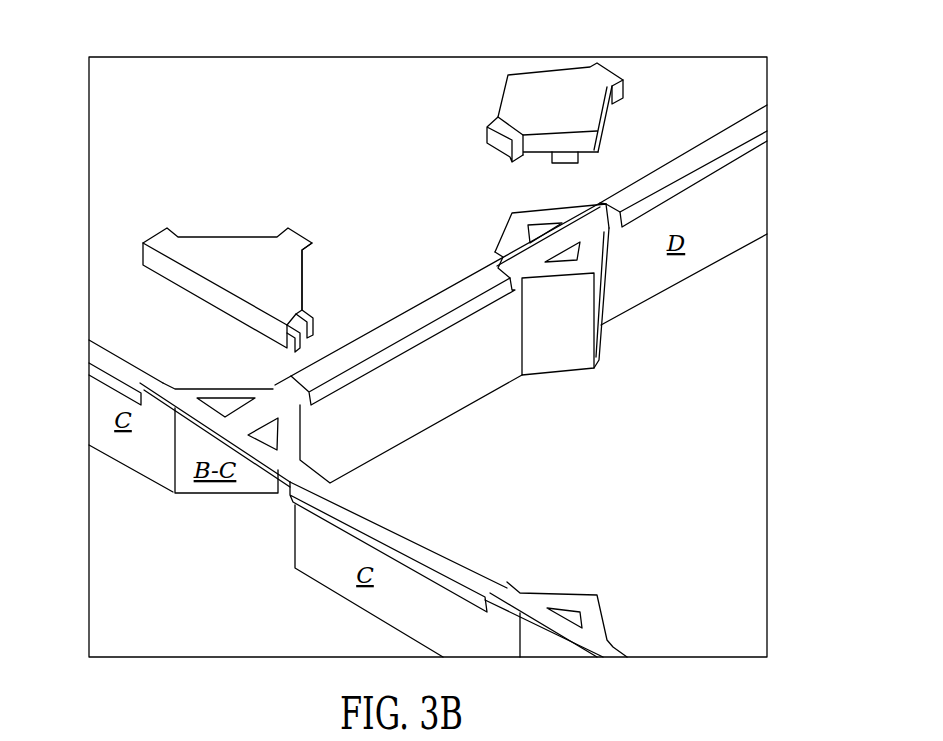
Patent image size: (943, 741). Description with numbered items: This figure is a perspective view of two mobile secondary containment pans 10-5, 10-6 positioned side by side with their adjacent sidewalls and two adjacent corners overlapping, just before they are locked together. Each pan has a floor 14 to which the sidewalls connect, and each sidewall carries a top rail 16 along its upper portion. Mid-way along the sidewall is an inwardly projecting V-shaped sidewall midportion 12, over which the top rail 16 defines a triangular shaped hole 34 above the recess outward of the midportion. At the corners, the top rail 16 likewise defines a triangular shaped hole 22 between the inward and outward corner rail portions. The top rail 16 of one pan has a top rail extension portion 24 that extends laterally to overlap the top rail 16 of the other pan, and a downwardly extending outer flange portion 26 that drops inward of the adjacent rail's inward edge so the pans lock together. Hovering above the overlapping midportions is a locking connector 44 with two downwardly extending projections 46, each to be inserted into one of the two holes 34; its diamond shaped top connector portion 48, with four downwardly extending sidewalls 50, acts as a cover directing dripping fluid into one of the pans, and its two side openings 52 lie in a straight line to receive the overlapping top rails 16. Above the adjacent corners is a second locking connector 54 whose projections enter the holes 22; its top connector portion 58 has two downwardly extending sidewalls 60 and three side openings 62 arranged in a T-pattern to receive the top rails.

The pan 10-5 is at (232, 77).
The pan 10-6 is at (705, 458).
The V-shaped sidewall midportion 12 is at (560, 333).
The floor 14 is at (428, 357).
The top rail 16 is at (603, 210).
The triangular shaped hole 22 is at (210, 408).
The top rail extension portion 24 is at (112, 360).
The outer flange portion 26 is at (110, 383).
The triangular shaped hole 34 is at (530, 233).
The locking connector 44 is at (552, 101).
The downwardly extending projection 46 is at (580, 165).
The diamond shaped top connector portion 48 is at (560, 95).
The downwardly extending sidewall 50 is at (500, 90).
The side opening 52 is at (615, 70).
The locking connector 54 is at (237, 255).
The top connector portion 58 is at (205, 255).
The downwardly extending sidewall 60 is at (257, 233).
The side opening 62 is at (163, 232).